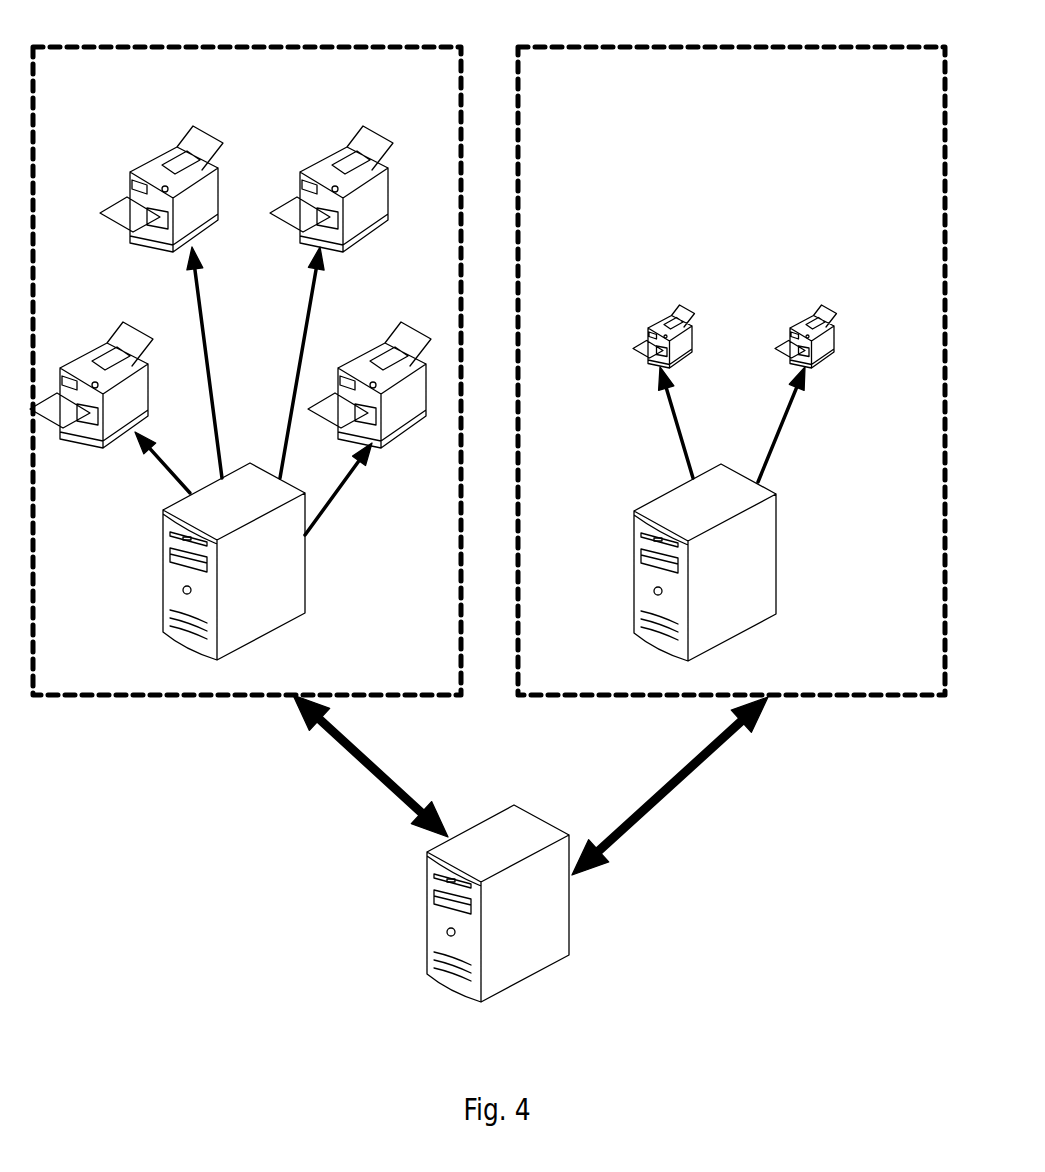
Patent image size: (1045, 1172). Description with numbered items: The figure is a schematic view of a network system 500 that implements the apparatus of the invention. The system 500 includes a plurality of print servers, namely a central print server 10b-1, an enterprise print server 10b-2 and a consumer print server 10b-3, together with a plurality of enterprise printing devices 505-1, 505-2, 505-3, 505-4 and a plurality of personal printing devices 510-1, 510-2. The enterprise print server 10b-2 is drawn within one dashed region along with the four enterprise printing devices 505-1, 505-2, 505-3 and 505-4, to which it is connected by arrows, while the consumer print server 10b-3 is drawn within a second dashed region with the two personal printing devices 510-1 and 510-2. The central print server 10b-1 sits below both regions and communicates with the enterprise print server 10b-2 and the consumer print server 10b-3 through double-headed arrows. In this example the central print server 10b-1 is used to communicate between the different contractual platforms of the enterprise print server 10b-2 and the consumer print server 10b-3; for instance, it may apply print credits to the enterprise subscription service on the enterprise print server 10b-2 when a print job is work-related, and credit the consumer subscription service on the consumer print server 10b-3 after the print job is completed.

The network system 500 is at (290, 995).
The enterprise printing device 505-1 is at (123, 408).
The enterprise printing device 505-2 is at (147, 178).
The enterprise printing device 505-3 is at (327, 178).
The enterprise printing device 505-4 is at (403, 410).
The personal printing device 510-1 is at (657, 335).
The personal printing device 510-2 is at (800, 330).
The central print server 10b-1 is at (540, 953).
The enterprise print server 10b-2 is at (240, 617).
The consumer print server 10b-3 is at (733, 612).